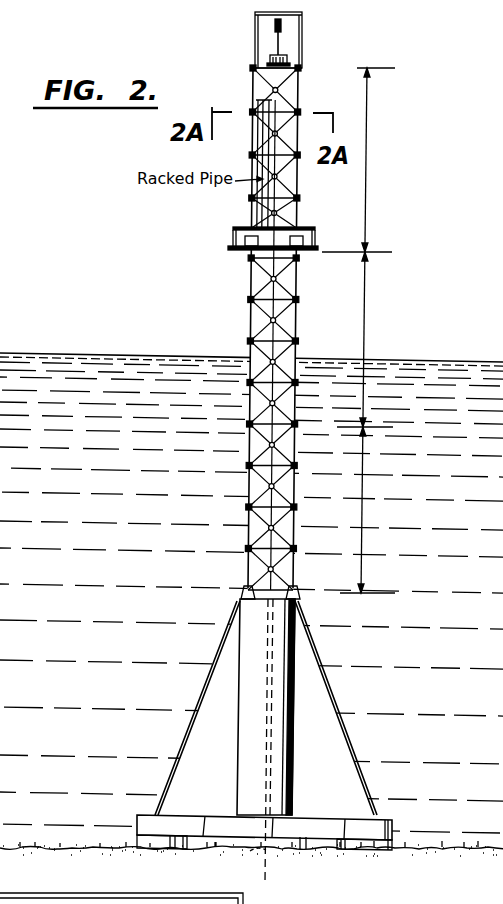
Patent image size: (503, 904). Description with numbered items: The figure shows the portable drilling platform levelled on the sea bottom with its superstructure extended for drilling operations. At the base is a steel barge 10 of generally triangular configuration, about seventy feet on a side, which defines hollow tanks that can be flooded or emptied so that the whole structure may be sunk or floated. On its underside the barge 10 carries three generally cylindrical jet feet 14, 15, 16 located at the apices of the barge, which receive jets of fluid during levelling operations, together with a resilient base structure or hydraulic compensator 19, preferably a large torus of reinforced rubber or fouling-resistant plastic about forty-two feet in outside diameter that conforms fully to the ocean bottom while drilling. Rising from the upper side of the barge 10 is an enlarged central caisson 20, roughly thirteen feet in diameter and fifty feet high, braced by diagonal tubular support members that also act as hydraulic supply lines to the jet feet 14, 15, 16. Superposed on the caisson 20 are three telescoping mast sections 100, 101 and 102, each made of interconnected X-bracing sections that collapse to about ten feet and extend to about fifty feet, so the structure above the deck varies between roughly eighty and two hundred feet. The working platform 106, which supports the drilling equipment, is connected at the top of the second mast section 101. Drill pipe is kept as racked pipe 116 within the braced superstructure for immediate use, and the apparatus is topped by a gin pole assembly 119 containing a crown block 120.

The steel barge 10 is at (325, 826).
The jet foot structure 14 is at (153, 839).
The jet foot structure 15 is at (374, 840).
The jet foot structure 16 is at (248, 853).
The resilient base structure or hydraulic compensator 19 is at (309, 838).
The central caisson 20 is at (273, 753).
The mast section 100 is at (371, 524).
The mast section 101 is at (373, 339).
The mast section 102 is at (380, 187).
The working platform 106 is at (233, 249).
The racked pipe 116 is at (257, 139).
The gin pole assembly 119 is at (255, 37).
The crown block 120 is at (270, 52).